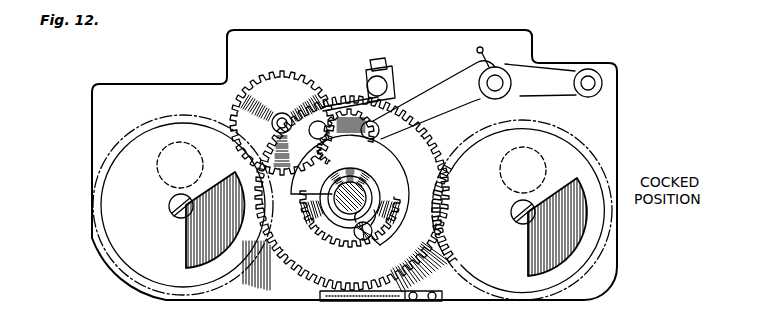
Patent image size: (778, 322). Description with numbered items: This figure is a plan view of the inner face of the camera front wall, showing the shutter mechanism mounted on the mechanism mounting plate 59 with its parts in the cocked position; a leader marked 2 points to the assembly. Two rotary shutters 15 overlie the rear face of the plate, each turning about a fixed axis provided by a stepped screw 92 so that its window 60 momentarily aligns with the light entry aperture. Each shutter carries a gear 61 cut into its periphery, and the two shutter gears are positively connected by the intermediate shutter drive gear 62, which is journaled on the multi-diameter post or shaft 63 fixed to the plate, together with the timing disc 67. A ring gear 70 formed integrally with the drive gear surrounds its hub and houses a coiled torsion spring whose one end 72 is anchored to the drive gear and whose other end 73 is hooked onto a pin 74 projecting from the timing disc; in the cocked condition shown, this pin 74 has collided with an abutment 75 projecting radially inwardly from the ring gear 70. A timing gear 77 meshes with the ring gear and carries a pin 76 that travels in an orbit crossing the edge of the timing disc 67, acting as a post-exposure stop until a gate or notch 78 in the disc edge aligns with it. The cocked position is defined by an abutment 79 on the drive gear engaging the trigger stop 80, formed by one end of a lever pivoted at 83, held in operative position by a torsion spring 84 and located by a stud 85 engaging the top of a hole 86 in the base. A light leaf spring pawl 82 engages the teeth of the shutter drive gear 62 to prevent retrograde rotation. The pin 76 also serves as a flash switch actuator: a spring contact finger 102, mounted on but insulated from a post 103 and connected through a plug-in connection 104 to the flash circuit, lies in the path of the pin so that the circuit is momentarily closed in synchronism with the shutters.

The camera 2 is at (384, 303).
The shutters 15 is at (141, 229).
The mechanism mounting plate 59 is at (338, 37).
The windows 60 is at (187, 238).
The gear 61 is at (219, 127).
The shutter drive gear 62 is at (418, 138).
The post or shaft 63 is at (381, 184).
The timing disc 67 is at (399, 172).
The ring gear 70 is at (376, 250).
The end of spring 72 is at (370, 269).
The end of spring 73 is at (350, 219).
The pin 74 is at (387, 248).
The abutment 75 is at (349, 256).
The pin 76 is at (316, 134).
The timing gear 77 is at (291, 101).
The gate or notch 78 is at (346, 152).
The abutment 79 is at (384, 119).
The trigger stop 80 is at (433, 107).
The leaf spring type pawl 82 is at (358, 301).
The pivot 83 is at (497, 78).
The torsion spring 84 is at (477, 50).
The stud 85 is at (601, 78).
The hole 86 is at (590, 68).
The screw 92 is at (169, 204).
The spring contact finger 102 is at (340, 105).
The post 103 is at (363, 75).
The electrical connection 104 is at (381, 60).